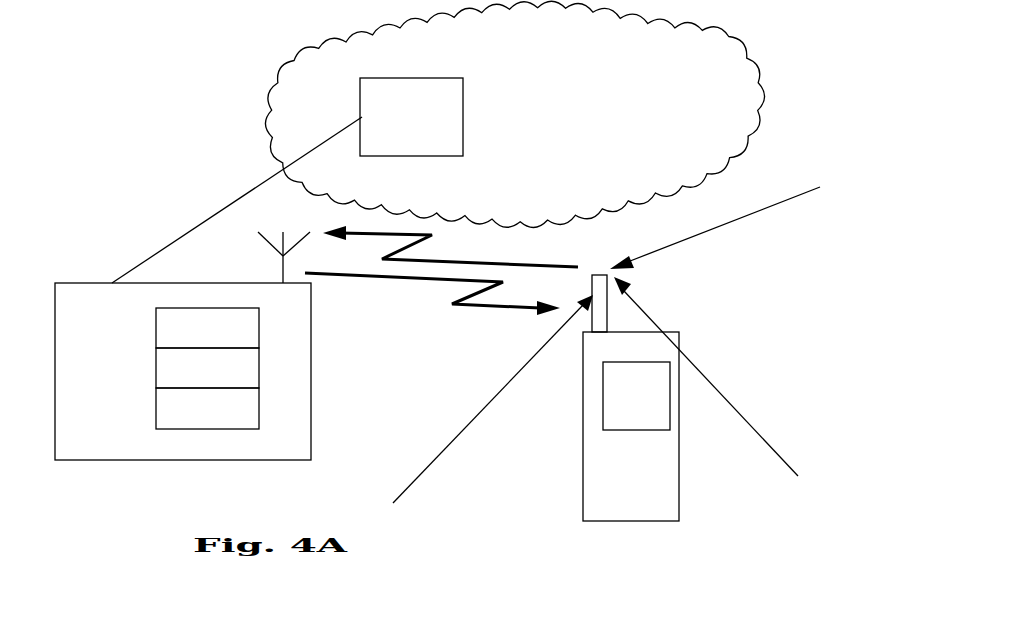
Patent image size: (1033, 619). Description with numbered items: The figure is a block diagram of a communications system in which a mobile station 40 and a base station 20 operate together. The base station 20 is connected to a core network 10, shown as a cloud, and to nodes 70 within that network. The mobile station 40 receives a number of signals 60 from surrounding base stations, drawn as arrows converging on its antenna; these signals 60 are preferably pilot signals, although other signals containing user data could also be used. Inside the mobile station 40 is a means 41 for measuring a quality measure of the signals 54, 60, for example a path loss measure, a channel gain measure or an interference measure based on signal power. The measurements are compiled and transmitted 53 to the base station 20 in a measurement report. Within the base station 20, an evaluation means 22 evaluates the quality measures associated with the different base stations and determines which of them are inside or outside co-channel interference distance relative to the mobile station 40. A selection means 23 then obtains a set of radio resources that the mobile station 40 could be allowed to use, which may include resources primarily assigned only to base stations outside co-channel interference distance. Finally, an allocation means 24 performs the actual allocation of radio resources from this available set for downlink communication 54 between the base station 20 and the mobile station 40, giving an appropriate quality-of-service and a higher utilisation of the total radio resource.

The core network 10 is at (290, 87).
The nodes 70 is at (452, 123).
The base station 20 is at (178, 452).
The evaluation means 22 is at (166, 403).
The selection means 23 is at (163, 357).
The allocation means 24 is at (163, 317).
The measurement report transmission 53 is at (537, 264).
The downlink communication 54 is at (442, 281).
The signals 60 is at (717, 227).
The mobile station 40 is at (622, 510).
The means for measuring 41 is at (610, 401).